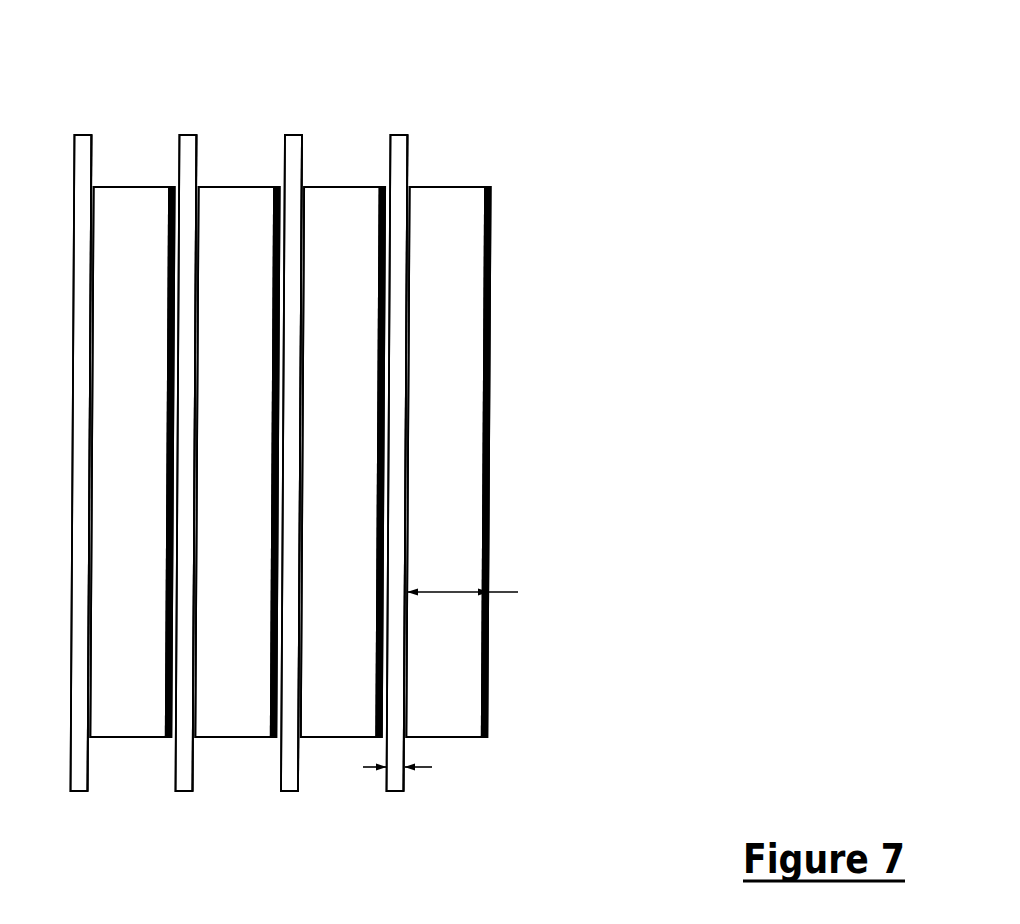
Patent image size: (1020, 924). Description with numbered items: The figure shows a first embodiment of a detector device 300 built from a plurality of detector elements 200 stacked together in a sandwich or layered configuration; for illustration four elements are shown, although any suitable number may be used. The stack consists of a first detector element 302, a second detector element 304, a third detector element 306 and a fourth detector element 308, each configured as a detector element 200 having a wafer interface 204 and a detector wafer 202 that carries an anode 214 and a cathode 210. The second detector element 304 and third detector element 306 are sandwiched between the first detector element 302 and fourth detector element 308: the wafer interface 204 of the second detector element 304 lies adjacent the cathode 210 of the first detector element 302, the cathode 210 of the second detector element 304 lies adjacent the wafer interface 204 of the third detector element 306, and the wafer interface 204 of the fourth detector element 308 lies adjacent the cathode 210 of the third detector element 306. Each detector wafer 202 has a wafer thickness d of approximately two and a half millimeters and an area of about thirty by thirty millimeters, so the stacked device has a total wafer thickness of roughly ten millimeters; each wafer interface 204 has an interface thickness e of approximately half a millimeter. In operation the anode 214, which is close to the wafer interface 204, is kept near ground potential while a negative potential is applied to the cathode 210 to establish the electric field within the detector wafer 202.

The detector element 200 is at (229, 514).
The detector wafer 202 is at (290, 415).
The wafer interface 204 is at (236, 414).
The cathode 210 is at (296, 462).
The anode 214 is at (278, 463).
The detector device 300 is at (757, 50).
The first detector element 302 is at (148, 689).
The second detector element 304 is at (259, 689).
The third detector element 306 is at (364, 689).
The fourth detector element 308 is at (468, 689).
The wafer thickness d is at (475, 591).
The interface thickness e is at (408, 764).